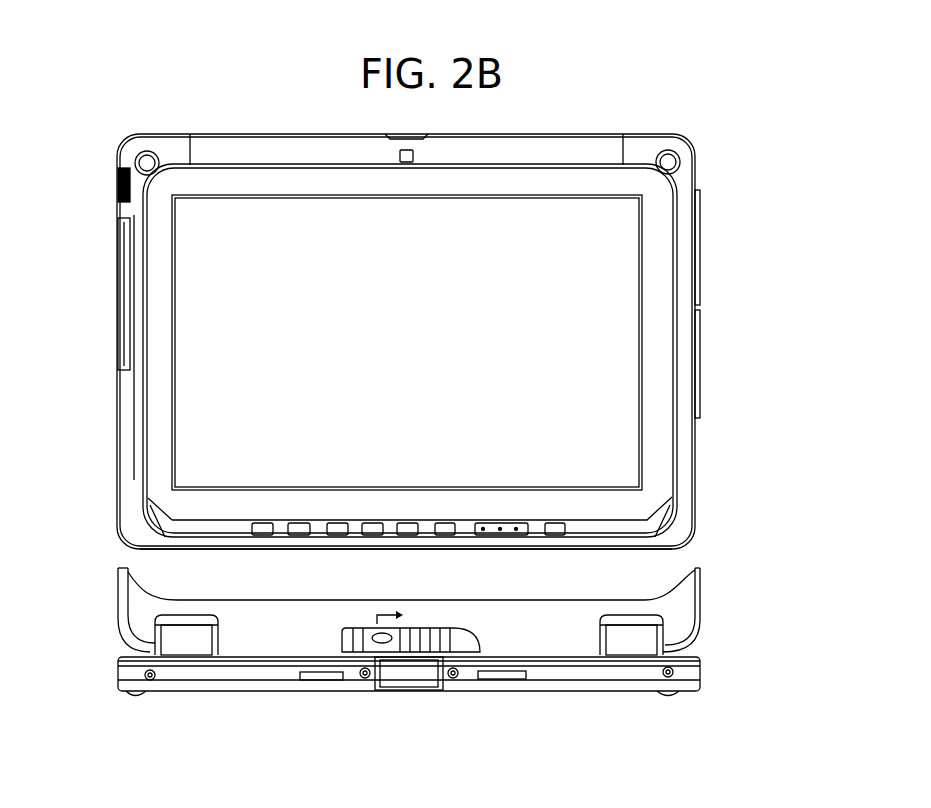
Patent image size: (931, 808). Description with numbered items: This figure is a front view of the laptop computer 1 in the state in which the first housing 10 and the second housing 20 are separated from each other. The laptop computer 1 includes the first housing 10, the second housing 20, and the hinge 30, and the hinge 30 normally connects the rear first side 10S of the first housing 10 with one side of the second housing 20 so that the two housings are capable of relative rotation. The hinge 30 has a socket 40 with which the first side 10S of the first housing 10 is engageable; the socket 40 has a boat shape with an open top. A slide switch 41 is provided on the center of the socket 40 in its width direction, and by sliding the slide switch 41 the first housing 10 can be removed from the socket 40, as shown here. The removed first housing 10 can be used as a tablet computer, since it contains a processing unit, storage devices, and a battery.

The laptop computer 1 is at (768, 278).
The first housing 10 is at (705, 230).
The first side 10S is at (548, 550).
The second housing 20 is at (708, 670).
The hinge 30 is at (180, 643).
The socket 40 is at (708, 587).
The slide switch 41 is at (365, 638).